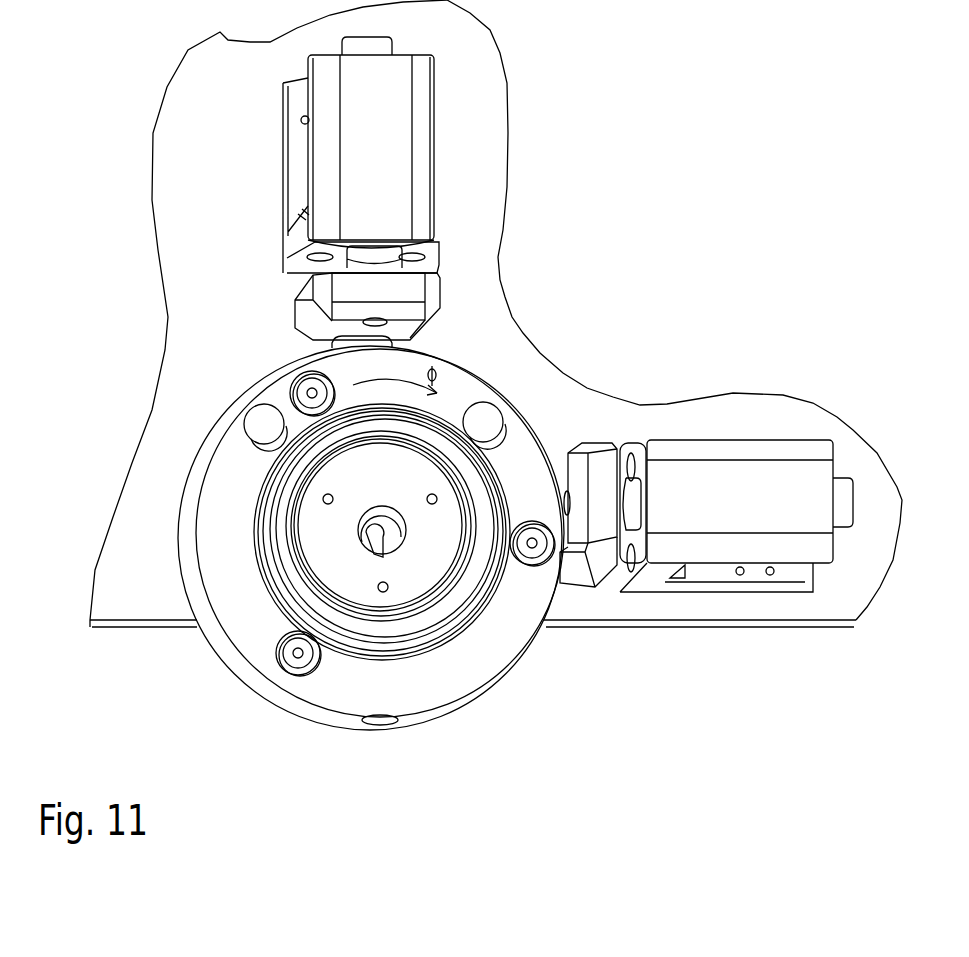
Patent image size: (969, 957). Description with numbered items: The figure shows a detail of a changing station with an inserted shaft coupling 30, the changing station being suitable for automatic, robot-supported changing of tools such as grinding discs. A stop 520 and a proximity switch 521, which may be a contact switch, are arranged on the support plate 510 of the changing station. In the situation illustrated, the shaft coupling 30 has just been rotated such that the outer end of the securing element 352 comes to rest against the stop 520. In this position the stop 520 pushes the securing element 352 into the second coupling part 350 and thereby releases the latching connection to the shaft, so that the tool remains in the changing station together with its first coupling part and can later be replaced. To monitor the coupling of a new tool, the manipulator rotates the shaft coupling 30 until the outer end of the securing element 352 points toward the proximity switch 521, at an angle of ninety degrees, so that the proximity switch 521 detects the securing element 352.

The shaft coupling 30 is at (472, 663).
The second coupling part 350 is at (468, 611).
The securing element 352 is at (353, 345).
The support plate 510 is at (833, 598).
The stop 520 is at (417, 292).
The proximity switch 521 is at (600, 460).